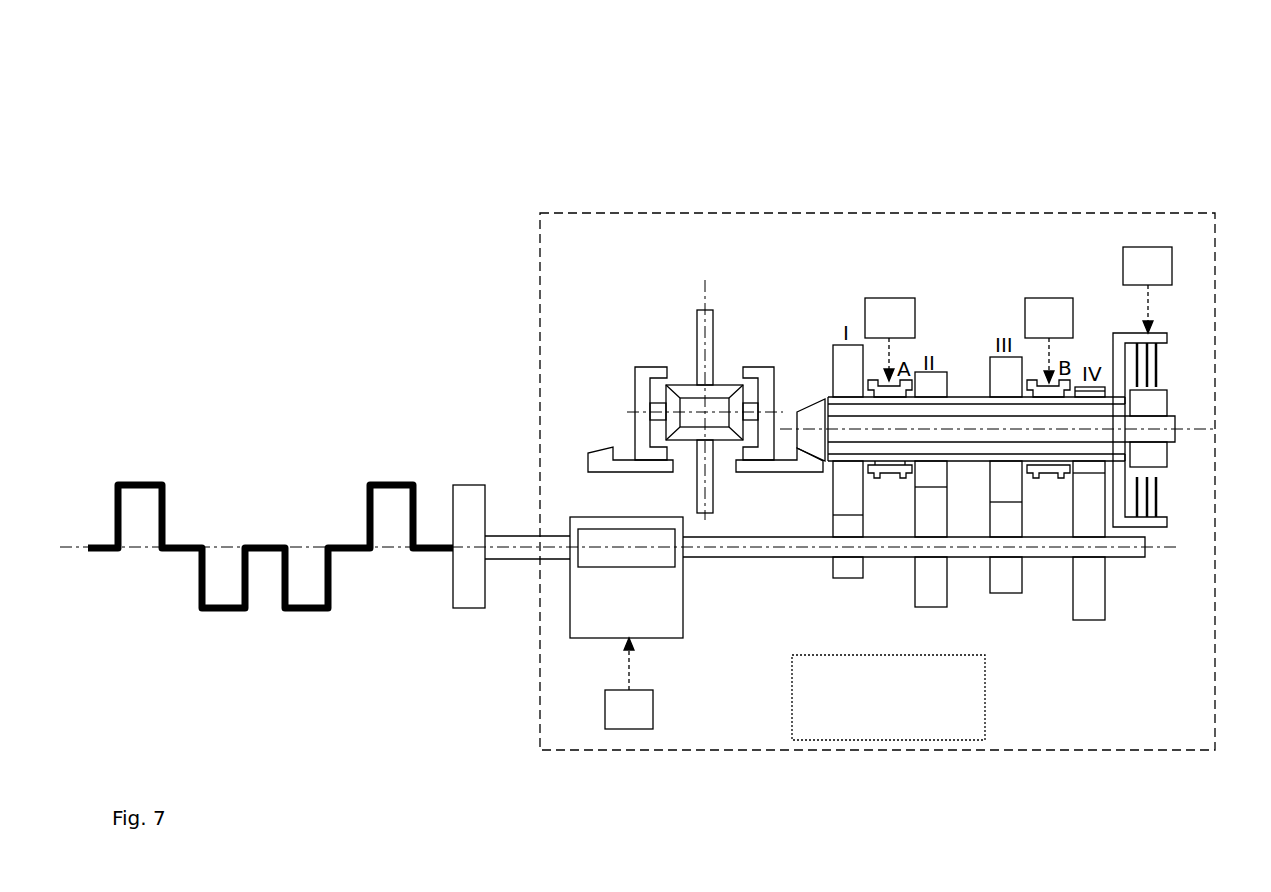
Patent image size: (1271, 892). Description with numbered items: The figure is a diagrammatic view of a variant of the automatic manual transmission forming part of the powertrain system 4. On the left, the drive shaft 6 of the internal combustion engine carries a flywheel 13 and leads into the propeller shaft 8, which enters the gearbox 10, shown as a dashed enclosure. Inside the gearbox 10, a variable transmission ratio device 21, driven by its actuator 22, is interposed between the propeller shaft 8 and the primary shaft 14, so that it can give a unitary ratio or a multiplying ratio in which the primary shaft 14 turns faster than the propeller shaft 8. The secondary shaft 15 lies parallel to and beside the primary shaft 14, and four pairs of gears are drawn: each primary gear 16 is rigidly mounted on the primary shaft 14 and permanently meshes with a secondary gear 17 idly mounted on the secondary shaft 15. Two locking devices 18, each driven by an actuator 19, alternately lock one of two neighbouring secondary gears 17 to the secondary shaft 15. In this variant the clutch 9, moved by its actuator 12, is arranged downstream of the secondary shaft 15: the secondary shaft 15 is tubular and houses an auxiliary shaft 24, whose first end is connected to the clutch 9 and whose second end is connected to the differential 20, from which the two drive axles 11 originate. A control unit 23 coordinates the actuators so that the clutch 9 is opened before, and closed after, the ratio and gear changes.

The powertrain system 4 is at (208, 113).
The drive shaft 6 is at (312, 612).
The propeller shaft 8 is at (520, 553).
The servo-assisted clutch 9 is at (1175, 505).
The gearbox 10 is at (884, 178).
The drive axles 11 is at (708, 322).
The actuator 12 is at (1147, 290).
The flywheel 13 is at (470, 597).
The primary shaft 14 is at (790, 560).
The secondary shaft 15 is at (973, 397).
The primary gear 16 is at (1007, 580).
The secondary gear 17 is at (843, 358).
The locking device 18 is at (897, 472).
The actuator 19 is at (969, 340).
The differential 20 is at (660, 327).
The variable transmission ratio device 21 is at (673, 623).
The actuator 22 is at (629, 683).
The control unit 23 is at (888, 697).
The auxiliary shaft 24 is at (1172, 417).